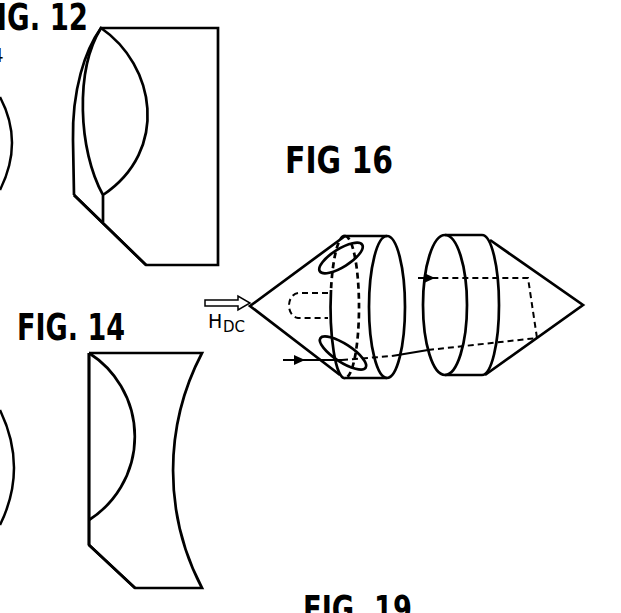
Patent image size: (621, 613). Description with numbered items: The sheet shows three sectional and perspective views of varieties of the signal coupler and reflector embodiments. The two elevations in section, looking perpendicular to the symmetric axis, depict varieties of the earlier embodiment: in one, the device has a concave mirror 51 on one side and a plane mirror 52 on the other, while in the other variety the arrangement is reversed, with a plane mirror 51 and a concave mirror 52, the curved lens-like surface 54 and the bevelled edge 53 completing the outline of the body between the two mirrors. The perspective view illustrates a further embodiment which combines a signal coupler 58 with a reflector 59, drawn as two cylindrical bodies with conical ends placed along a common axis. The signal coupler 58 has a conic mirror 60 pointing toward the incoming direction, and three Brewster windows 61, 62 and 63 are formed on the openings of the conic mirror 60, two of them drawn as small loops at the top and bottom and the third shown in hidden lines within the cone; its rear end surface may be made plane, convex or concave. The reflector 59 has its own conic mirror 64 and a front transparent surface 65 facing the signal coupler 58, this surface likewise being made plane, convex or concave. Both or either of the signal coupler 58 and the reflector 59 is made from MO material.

In FIG. 12, the concave mirror 51 is at (74, 179).
In FIG. 14, the concave mirror 51 is at (89, 434).
In FIG. 12, the plane mirror 52 is at (218, 103).
In FIG. 14, the plane mirror 52 is at (174, 470).
In FIG. 12, the bevelled edge 53 is at (118, 240).
In FIG. 14, the bevelled edge 53 is at (115, 572).
In FIG. 12, the curved lens surface 54 is at (105, 78).
In FIG. 14, the curved lens surface 54 is at (108, 388).
In FIG. 16, the signal coupler 58 is at (274, 354).
In FIG. 16, the reflector 59 is at (526, 370).
In FIG. 16, the conic mirror 60 is at (280, 296).
In FIG. 16, the Brewster window 61 is at (336, 373).
In FIG. 16, the Brewster window 62 is at (333, 246).
In FIG. 16, the Brewster window 63 is at (312, 293).
In FIG. 16, the conic mirror 64 is at (396, 357).
In FIG. 16, the front transparent surface 65 is at (440, 250).